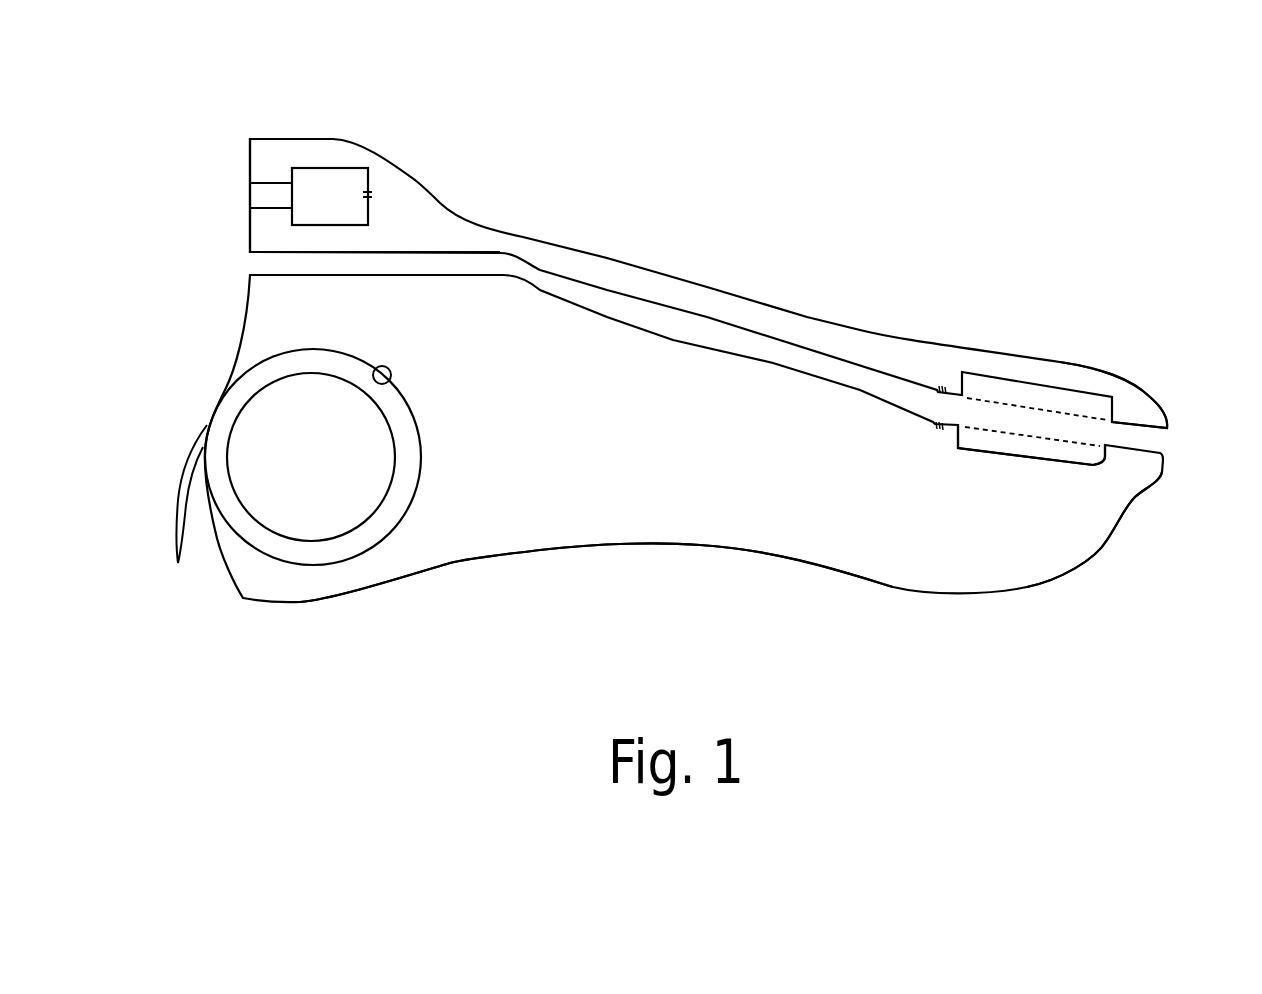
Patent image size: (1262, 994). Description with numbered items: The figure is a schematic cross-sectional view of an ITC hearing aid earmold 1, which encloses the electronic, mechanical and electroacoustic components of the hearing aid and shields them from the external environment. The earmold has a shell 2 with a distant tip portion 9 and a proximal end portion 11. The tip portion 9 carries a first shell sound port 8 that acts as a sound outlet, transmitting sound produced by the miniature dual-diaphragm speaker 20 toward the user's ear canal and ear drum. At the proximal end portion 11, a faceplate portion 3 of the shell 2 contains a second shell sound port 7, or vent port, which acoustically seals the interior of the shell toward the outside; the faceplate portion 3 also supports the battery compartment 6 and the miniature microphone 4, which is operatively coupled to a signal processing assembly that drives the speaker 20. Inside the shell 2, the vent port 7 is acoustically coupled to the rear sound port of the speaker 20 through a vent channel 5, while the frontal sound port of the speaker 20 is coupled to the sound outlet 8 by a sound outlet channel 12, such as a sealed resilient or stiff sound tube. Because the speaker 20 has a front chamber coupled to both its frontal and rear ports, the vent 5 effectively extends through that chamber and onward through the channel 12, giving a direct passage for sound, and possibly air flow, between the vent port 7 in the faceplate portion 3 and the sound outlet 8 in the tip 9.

The ITC hearing aid earmold 1 is at (905, 596).
The shell 2 is at (645, 550).
The faceplate portion 3 is at (237, 336).
The miniature microphone 4 is at (350, 180).
The vent channel 5 is at (658, 332).
The battery compartment 6 is at (205, 404).
The second shell sound port 7 is at (260, 262).
The first shell sound port 8 is at (1163, 440).
The distant tip portion 9 is at (1117, 527).
The proximal end portion 11 is at (265, 139).
The sound outlet channel 12 is at (1143, 423).
The miniature dual-diaphragm speaker 20 is at (1015, 464).